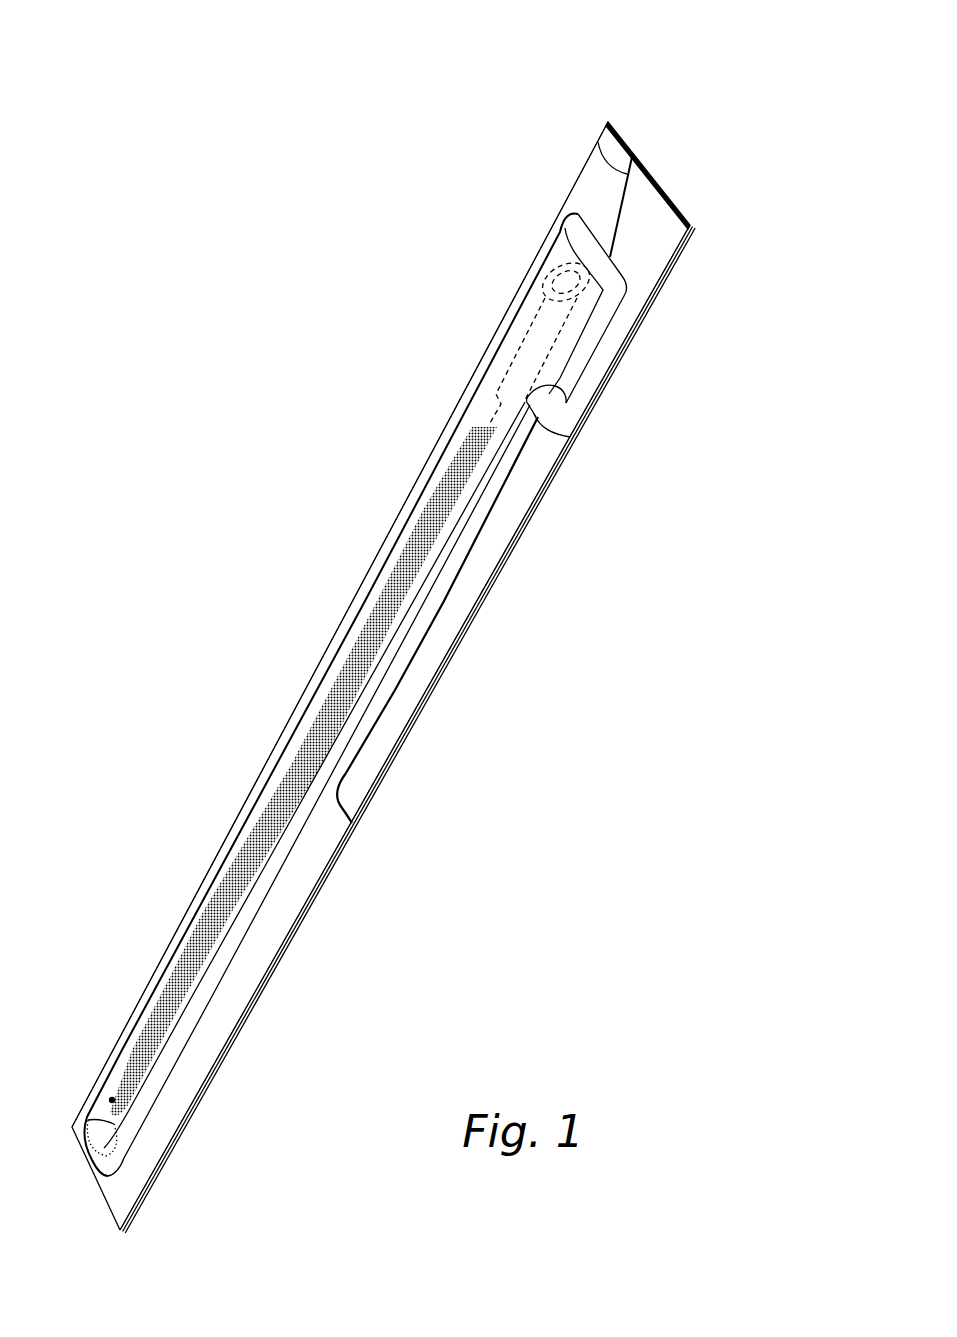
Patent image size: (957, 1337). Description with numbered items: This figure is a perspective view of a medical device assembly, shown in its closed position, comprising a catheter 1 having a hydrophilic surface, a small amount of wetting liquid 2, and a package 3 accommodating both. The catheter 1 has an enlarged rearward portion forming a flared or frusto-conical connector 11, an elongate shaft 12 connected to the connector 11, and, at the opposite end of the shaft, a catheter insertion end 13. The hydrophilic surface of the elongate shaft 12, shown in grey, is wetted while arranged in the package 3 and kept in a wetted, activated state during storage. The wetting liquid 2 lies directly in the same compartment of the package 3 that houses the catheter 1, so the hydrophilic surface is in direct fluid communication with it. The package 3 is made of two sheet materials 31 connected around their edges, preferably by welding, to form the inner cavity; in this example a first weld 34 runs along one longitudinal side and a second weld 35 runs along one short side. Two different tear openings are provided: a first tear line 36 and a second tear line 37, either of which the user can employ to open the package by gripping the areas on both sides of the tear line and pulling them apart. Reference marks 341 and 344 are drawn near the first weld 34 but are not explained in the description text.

The catheter 1 is at (314, 685).
The wetting liquid 2 is at (108, 1135).
The package 3 is at (308, 690).
The connector 11 is at (540, 322).
The elongate shaft 12 is at (253, 842).
The catheter insertion end 13 is at (130, 1072).
The sheet materials 31 is at (692, 225).
The first weld 34 is at (484, 528).
The second weld 35 is at (597, 175).
The first tear line 36 is at (598, 143).
The second tear line 37 is at (400, 674).
The notch 341 is at (535, 398).
The bulge 344 is at (568, 437).